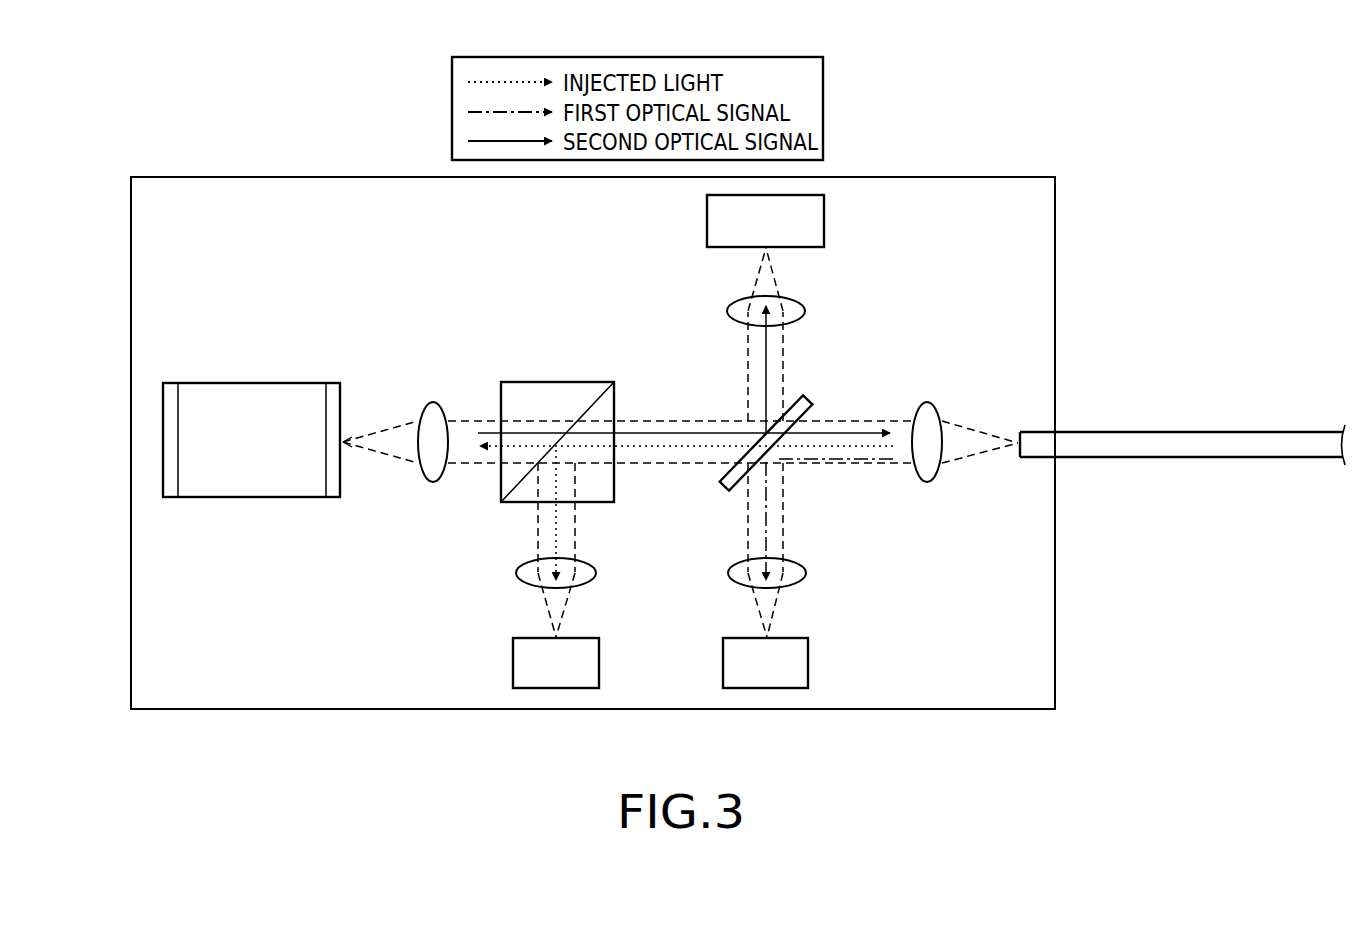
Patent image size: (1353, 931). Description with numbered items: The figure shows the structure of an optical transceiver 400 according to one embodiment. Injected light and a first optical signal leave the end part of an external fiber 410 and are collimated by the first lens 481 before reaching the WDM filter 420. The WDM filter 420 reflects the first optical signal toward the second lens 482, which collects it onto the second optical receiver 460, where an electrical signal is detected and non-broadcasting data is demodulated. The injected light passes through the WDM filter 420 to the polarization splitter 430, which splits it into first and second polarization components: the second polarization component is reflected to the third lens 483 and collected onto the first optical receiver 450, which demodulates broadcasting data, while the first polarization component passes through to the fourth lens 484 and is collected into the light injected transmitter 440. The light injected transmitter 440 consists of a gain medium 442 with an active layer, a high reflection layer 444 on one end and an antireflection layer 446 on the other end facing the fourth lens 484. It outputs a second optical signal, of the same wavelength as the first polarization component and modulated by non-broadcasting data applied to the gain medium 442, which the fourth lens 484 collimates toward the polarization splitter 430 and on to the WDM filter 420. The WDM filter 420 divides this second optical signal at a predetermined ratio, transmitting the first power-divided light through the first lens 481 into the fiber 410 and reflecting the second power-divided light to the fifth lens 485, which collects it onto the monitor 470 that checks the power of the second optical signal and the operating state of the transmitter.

The optical transceiver 400 is at (683, 757).
The external fiber 410 is at (1181, 432).
The WDM filter 420 is at (807, 401).
The polarization splitter 430 is at (556, 382).
The light injected transmitter 440 is at (253, 370).
The gain medium 442 is at (213, 382).
The high reflection layer 444 is at (166, 382).
The antireflection layer 446 is at (332, 382).
The first optical receiver 450 is at (600, 663).
The second optical receiver 460 is at (809, 663).
The monitor 470 is at (825, 221).
The first lens 481 is at (927, 482).
The second lens 482 is at (727, 573).
The third lens 483 is at (597, 573).
The fourth lens 484 is at (433, 482).
The fifth lens 485 is at (727, 311).